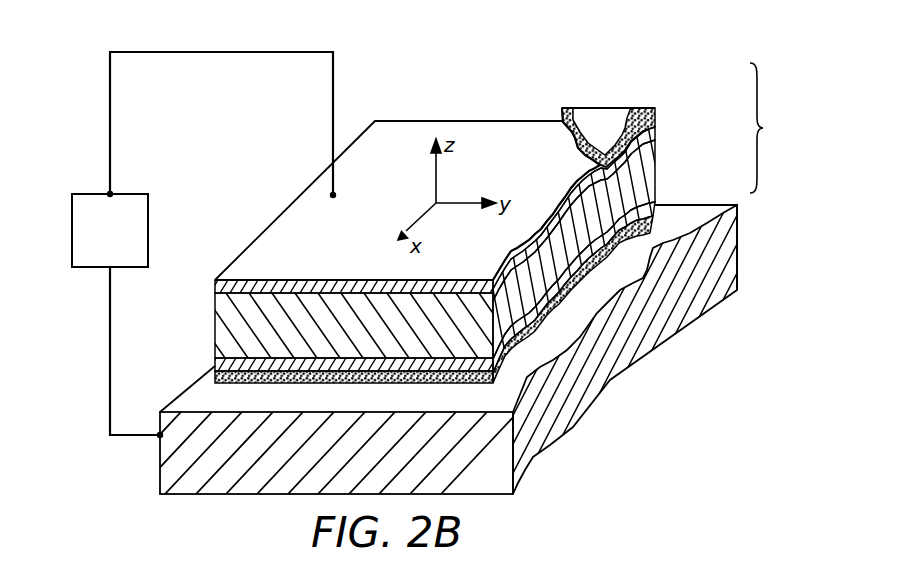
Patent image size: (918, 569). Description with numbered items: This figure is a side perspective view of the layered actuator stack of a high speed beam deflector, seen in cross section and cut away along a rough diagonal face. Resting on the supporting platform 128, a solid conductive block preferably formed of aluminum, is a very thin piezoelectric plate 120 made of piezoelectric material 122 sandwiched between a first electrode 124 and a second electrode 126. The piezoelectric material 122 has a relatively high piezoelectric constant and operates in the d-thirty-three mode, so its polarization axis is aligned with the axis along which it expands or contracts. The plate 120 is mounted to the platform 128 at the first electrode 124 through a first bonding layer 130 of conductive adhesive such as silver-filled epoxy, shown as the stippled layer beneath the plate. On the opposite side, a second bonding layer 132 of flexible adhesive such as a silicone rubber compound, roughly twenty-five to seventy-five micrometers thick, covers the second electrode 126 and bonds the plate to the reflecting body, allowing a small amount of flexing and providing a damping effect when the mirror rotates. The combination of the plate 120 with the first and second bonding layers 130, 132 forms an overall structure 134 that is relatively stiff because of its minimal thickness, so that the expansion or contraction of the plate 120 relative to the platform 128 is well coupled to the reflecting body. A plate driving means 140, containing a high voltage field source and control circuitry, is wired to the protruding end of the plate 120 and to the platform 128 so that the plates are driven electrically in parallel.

The piezoelectric plate 120 is at (433, 121).
The piezoelectric material 122 is at (655, 160).
The first electrode 124 is at (655, 195).
The second electrode 126 is at (655, 134).
The supporting platform 128 is at (607, 383).
The first bonding layer 130 is at (658, 206).
The second bonding layer 132 is at (655, 110).
The overall structure 134 is at (778, 128).
The plate driving means 140 is at (138, 193).